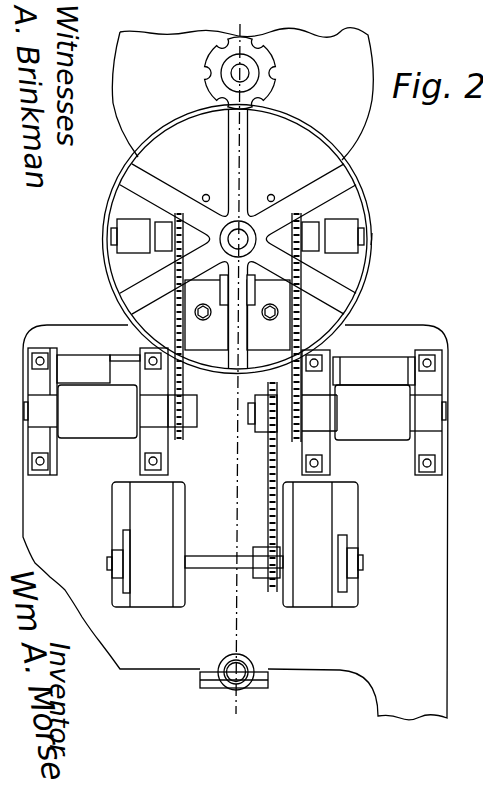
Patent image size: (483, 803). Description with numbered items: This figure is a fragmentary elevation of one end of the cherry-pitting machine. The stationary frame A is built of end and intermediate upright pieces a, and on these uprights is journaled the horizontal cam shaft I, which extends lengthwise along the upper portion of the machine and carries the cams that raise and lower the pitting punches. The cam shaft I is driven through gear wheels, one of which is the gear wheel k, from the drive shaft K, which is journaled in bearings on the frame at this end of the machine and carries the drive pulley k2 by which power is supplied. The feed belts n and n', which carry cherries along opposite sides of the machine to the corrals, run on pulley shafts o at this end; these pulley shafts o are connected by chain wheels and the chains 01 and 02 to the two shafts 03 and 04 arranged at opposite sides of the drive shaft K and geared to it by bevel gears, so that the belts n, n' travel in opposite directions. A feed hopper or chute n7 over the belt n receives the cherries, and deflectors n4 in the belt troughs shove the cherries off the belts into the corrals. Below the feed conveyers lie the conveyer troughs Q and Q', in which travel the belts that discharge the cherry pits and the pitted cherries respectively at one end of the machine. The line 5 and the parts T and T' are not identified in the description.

The stationary frame A is at (248, 374).
The end upright piece a is at (396, 557).
The section line 5 is at (263, 4).
The gear wheel k is at (262, 60).
The cam shaft I is at (245, 75).
The drive shaft K is at (241, 232).
The drive pulley k2 is at (369, 230).
The shaft 04 is at (158, 219).
The shaft 03 is at (329, 252).
The chain 02 is at (181, 335).
The chain 01 is at (298, 337).
The deflector n4 is at (78, 369).
The feed belt n' is at (97, 411).
The feed hopper n7 is at (374, 412).
The feed belt n is at (372, 412).
The pulley shaft o is at (255, 410).
The drive chain T is at (259, 487).
The conveyer trough Q' is at (146, 544).
The conveyer trough Q is at (323, 544).
The roller shaft T' is at (234, 554).